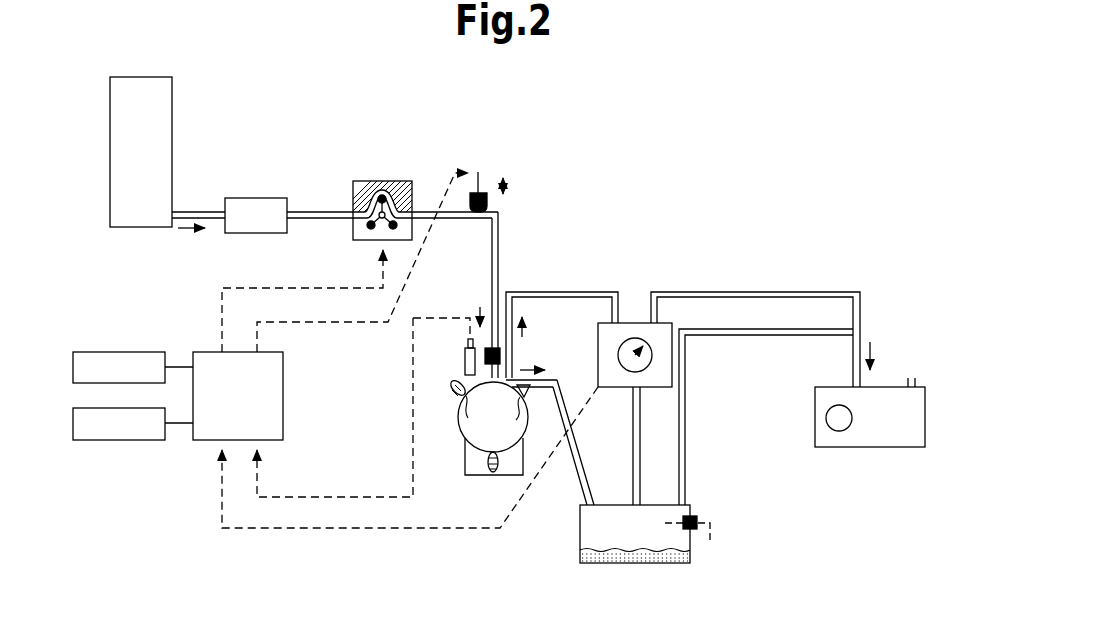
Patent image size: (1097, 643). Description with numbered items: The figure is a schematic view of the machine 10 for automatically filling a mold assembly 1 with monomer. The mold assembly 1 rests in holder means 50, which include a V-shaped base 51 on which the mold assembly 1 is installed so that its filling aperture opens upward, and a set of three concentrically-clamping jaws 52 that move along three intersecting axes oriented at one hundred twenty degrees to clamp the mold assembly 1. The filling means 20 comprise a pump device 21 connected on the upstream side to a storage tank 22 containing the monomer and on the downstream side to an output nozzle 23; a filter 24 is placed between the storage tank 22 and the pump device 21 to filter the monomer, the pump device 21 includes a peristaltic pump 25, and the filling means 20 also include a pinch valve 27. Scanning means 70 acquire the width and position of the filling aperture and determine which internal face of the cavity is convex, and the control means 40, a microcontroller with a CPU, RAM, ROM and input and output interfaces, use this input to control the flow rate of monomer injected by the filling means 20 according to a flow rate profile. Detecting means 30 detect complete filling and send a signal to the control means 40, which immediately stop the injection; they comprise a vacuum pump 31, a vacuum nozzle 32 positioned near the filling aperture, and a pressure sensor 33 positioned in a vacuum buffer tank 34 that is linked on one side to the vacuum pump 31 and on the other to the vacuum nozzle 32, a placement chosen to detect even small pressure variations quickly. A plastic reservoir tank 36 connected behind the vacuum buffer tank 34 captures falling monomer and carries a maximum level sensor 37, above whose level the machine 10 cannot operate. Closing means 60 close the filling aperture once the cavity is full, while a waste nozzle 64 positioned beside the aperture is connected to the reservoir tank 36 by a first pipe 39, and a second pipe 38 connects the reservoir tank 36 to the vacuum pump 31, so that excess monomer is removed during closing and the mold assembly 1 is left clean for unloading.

The mold assembly 1 is at (458, 420).
The machine 10 is at (835, 196).
The filling means 20 is at (339, 153).
The pump device 21 is at (420, 168).
The storage tank 22 is at (172, 143).
The output nozzle 23 is at (463, 352).
The filter 24 is at (253, 198).
The peristaltic pump 25 is at (400, 181).
The pinch valve 27 is at (482, 172).
The detecting means 30 is at (643, 265).
The vacuum pump 31 is at (815, 425).
The vacuum nozzle 32 is at (512, 357).
The pressure sensor 33 is at (650, 363).
The vacuum buffer tank 34 is at (655, 388).
The reservoir tank 36 is at (692, 540).
The maximum level sensor 37 is at (697, 515).
The second pipe 38 is at (673, 495).
The first pipe 39 is at (590, 490).
The control means 40 is at (130, 488).
The holder means 50 is at (514, 475).
The V-shaped base 51 is at (475, 477).
The concentrically-clamping jaws 52 is at (493, 452).
The closing means 60 is at (544, 420).
The waste nozzle 64 is at (537, 365).
The scanning means 70 is at (448, 365).